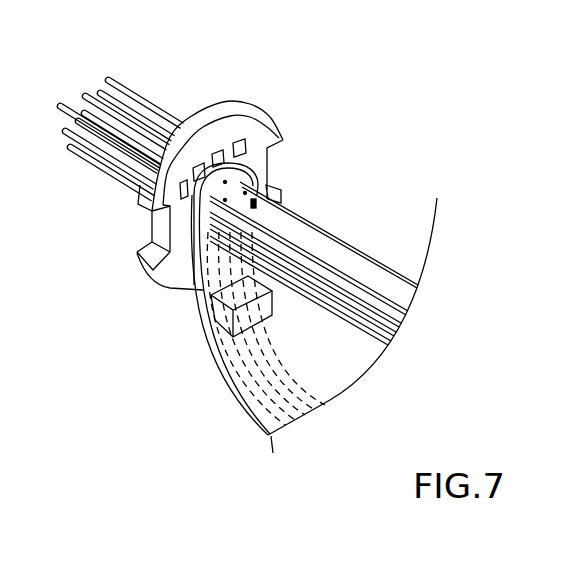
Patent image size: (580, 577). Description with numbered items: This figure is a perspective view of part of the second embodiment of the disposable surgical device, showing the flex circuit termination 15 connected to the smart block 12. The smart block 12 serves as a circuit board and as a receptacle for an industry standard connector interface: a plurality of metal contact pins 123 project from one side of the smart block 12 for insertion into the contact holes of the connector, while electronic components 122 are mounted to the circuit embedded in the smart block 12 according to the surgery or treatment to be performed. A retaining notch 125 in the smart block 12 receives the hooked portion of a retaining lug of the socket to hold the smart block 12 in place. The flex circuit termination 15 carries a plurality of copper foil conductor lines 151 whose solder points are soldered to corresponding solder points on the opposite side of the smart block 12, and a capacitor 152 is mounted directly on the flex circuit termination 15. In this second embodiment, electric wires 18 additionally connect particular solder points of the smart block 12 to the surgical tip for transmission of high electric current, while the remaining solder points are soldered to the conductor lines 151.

The smart block 12 is at (235, 171).
The electronic components 122 is at (243, 147).
The metal contact pins 123 is at (110, 78).
The retaining notch 125 is at (153, 228).
The flex circuit termination 15 is at (263, 373).
The conductor lines 151 is at (227, 360).
The capacitor 152 is at (222, 315).
The electric wires 18 is at (360, 247).